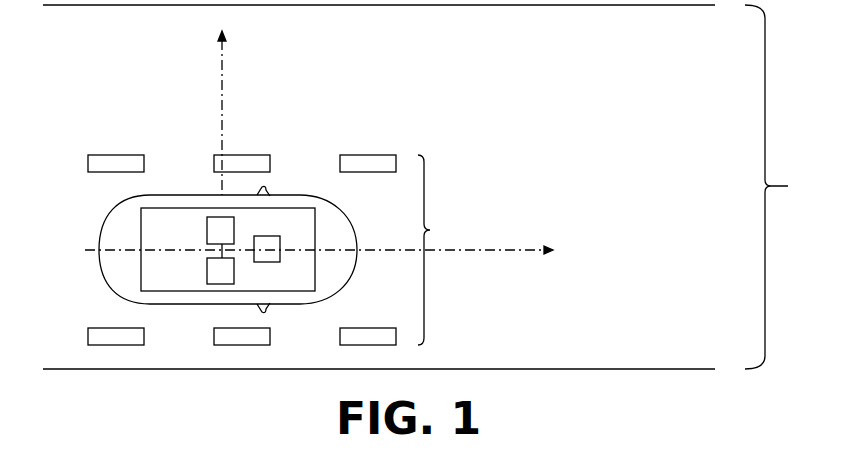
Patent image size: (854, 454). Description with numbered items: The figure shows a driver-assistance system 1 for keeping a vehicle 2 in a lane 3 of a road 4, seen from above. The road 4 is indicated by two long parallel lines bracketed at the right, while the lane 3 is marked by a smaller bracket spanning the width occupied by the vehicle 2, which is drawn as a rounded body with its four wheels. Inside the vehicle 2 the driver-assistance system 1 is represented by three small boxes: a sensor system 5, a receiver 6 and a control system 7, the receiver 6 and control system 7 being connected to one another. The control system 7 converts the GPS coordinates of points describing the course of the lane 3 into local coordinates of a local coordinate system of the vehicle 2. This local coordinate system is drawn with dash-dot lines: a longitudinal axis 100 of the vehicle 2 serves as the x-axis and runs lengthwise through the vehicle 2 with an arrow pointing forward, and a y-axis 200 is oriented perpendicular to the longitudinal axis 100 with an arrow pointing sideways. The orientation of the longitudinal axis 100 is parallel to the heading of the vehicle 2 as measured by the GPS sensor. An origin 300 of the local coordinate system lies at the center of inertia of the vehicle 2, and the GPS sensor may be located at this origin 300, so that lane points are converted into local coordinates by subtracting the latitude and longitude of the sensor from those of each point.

The driver-assistance system 1 is at (298, 208).
The vehicle 2 is at (322, 197).
The lane 3 is at (434, 250).
The road 4 is at (775, 187).
The sensor system 5 is at (266, 236).
The receiver 6 is at (207, 272).
The control system 7 is at (207, 230).
The longitudinal axis 100 is at (493, 253).
The y-axis 200 is at (228, 72).
The origin 300 is at (222, 250).